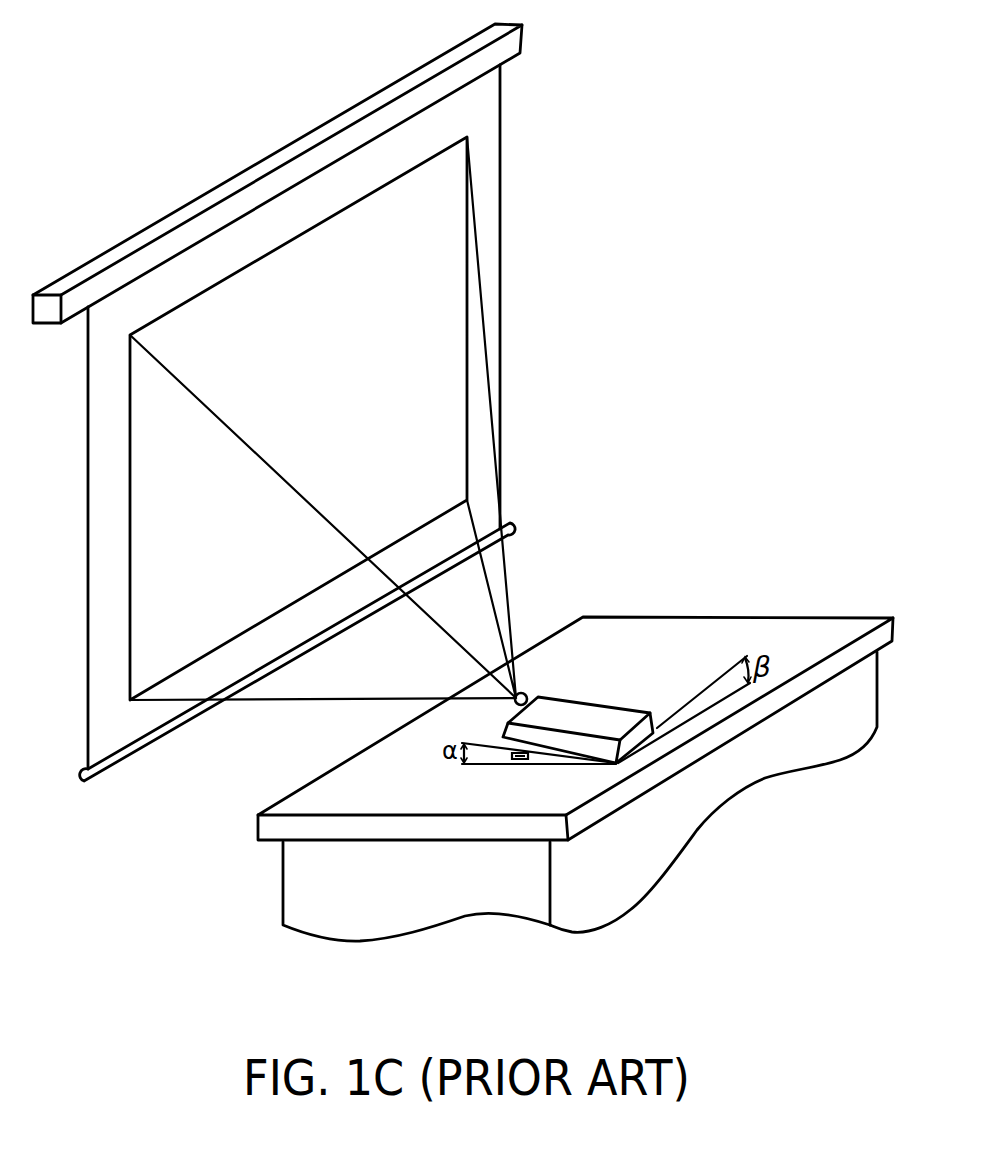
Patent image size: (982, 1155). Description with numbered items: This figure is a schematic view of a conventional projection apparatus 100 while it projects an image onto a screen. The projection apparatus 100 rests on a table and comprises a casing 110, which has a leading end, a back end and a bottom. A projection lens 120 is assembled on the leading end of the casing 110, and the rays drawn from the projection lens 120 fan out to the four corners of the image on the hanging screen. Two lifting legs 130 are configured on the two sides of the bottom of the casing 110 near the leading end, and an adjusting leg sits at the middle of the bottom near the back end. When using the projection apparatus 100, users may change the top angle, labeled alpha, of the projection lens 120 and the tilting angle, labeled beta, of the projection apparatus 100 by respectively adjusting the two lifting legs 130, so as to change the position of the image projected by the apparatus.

The projection apparatus 100 is at (391, 798).
The casing 110 is at (603, 698).
The projection lens 120 is at (528, 694).
The lifting legs 130 is at (509, 758).